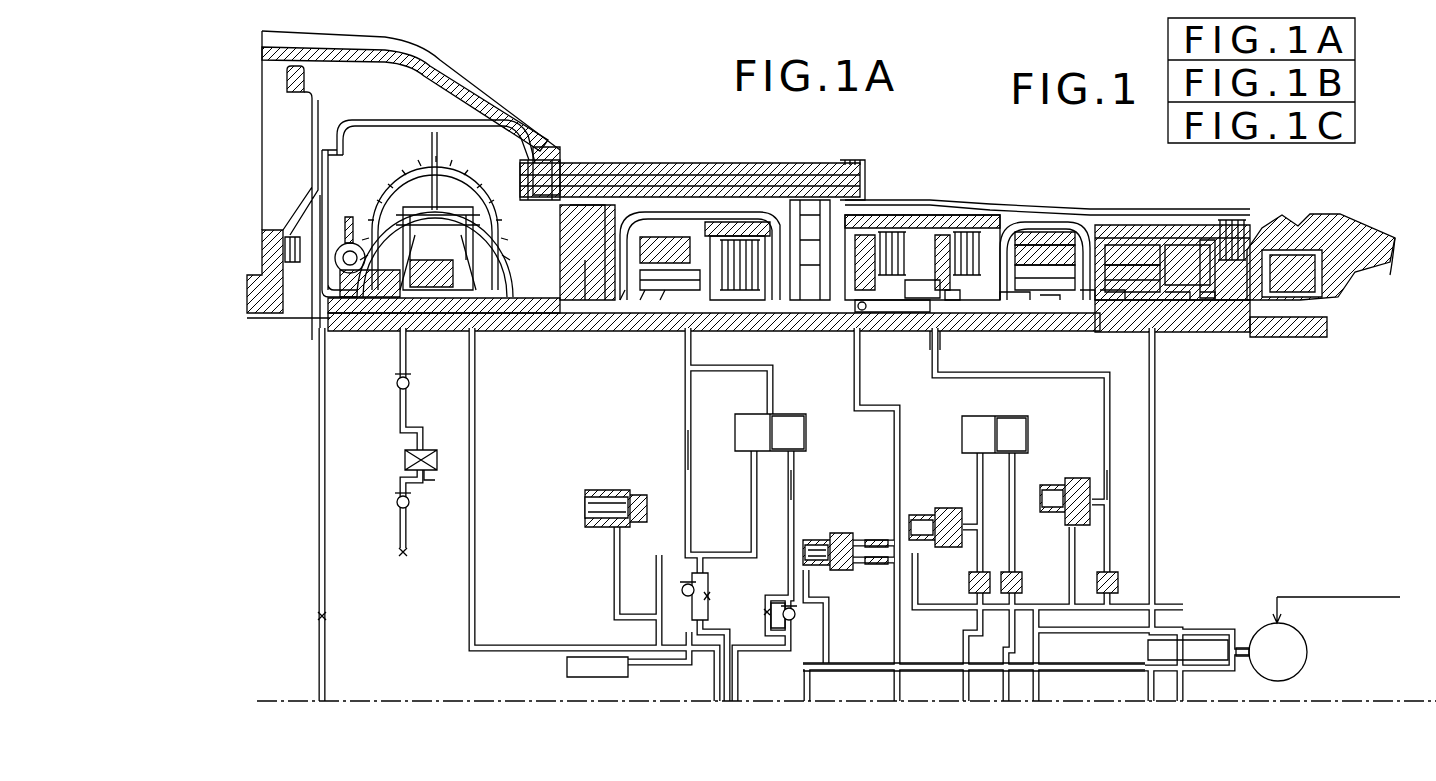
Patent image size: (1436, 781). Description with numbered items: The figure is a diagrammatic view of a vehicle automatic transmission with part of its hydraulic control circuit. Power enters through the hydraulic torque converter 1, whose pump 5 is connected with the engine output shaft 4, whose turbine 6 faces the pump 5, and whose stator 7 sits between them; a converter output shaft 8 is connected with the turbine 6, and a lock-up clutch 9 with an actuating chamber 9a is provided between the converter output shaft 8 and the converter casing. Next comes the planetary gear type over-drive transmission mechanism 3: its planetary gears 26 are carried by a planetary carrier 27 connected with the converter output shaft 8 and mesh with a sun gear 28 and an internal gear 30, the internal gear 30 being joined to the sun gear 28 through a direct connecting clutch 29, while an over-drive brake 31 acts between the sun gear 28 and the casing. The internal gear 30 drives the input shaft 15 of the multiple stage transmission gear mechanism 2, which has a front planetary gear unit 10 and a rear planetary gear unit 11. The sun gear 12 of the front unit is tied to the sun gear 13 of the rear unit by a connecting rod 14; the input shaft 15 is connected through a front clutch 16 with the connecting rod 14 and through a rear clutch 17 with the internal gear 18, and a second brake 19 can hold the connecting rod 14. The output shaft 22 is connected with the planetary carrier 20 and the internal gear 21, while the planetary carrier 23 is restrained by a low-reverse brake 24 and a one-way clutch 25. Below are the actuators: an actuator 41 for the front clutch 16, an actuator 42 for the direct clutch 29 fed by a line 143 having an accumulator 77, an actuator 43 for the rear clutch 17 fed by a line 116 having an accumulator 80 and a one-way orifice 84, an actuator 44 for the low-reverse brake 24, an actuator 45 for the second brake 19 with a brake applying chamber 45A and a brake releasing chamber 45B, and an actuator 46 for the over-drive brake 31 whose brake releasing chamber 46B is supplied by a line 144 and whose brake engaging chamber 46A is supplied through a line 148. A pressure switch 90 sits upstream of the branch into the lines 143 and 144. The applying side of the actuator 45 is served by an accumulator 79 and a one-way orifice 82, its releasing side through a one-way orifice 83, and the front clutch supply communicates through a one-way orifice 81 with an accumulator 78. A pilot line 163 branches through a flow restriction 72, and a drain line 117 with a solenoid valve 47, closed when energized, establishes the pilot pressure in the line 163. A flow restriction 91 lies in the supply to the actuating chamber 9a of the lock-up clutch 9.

The hydraulic torque converter 1 is at (531, 137).
The multiple stage transmission gear mechanism 2 is at (1094, 234).
The planetary gear type over-drive transmission mechanism 3 is at (662, 217).
The engine output shaft 4 is at (264, 316).
The pump 5 is at (507, 165).
The turbine 6 is at (384, 172).
The stator 7 is at (450, 227).
The converter output shaft 8 is at (353, 320).
The lock-up clutch 9 is at (314, 165).
The actuating chamber of the lock-up clutch 9a is at (314, 140).
The front planetary gear unit 10 is at (1037, 247).
The rear planetary gear unit 11 is at (1162, 237).
The sun gear 12 is at (1050, 314).
The sun gear 13 is at (1122, 314).
The connecting rod 14 is at (1090, 314).
The input shaft 15 is at (929, 335).
The front clutch 16 is at (890, 232).
The rear clutch 17 is at (966, 232).
The internal gear 18 is at (1057, 237).
The second brake 19 is at (922, 217).
The planetary carrier 20 is at (1012, 314).
The internal gear 21 is at (1197, 247).
The output shaft 22 is at (1165, 314).
The planetary carrier 23 is at (1122, 242).
The low-reverse brake 24 is at (1253, 227).
The one-way clutch 25 is at (1212, 314).
The planetary gears 26 is at (634, 217).
The planetary carrier 27 is at (684, 333).
The sun gear 28 is at (630, 333).
The direct connecting clutch 29 is at (744, 240).
The internal gear 30 is at (657, 232).
The over-drive brake 31 is at (707, 227).
The actuator 41 is at (870, 316).
The actuator 42 is at (780, 227).
The actuator 43 is at (952, 314).
The actuator 44 is at (1272, 269).
The actuator 45 is at (1031, 445).
The brake applying chamber 45A is at (962, 420).
The brake releasing chamber 45B is at (1029, 430).
The actuator 46 is at (841, 439).
The brake engaging chamber 46A is at (735, 420).
The brake releasing chamber 46B is at (797, 414).
The solenoid valve 47 is at (1300, 644).
The flow restriction 72 is at (1208, 630).
The accumulator 77 is at (613, 490).
The accumulator 78 is at (842, 534).
The accumulator 79 is at (937, 508).
The accumulator 80 is at (1087, 479).
The one-way orifice 81 is at (878, 567).
The one-way orifice 82 is at (968, 592).
The one-way orifice 83 is at (1022, 578).
The one-way orifice 84 is at (1114, 567).
The pressure switch 90 is at (567, 667).
The flow restriction 91 is at (330, 616).
The line 116 is at (1112, 499).
The drain line 117 is at (1247, 645).
The line 143 is at (692, 442).
The line 144 is at (795, 494).
The line 148 is at (742, 545).
The line 163 is at (949, 670).